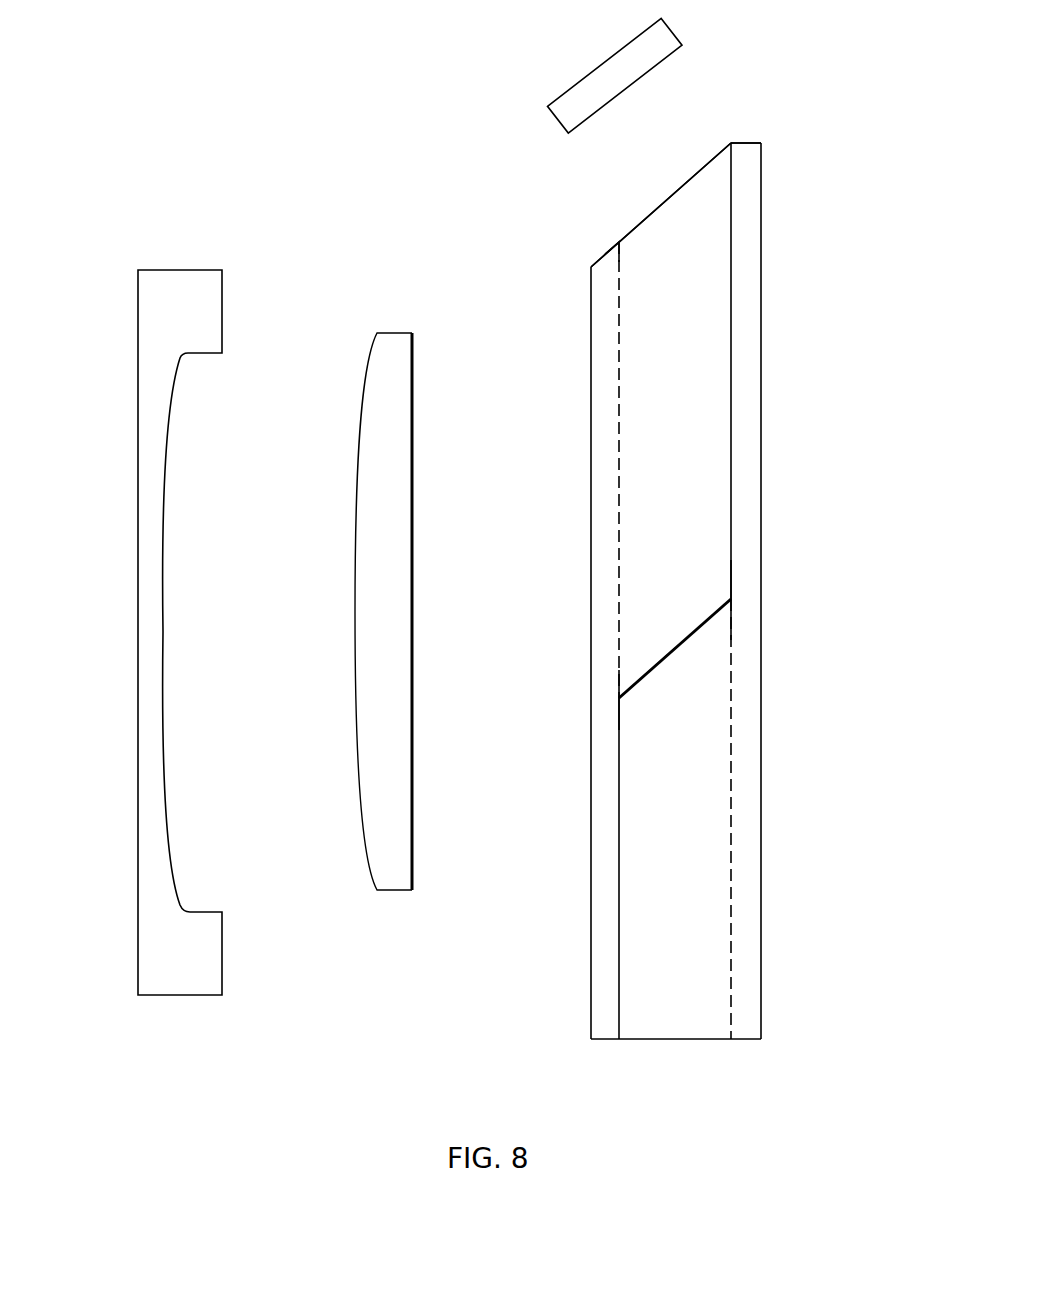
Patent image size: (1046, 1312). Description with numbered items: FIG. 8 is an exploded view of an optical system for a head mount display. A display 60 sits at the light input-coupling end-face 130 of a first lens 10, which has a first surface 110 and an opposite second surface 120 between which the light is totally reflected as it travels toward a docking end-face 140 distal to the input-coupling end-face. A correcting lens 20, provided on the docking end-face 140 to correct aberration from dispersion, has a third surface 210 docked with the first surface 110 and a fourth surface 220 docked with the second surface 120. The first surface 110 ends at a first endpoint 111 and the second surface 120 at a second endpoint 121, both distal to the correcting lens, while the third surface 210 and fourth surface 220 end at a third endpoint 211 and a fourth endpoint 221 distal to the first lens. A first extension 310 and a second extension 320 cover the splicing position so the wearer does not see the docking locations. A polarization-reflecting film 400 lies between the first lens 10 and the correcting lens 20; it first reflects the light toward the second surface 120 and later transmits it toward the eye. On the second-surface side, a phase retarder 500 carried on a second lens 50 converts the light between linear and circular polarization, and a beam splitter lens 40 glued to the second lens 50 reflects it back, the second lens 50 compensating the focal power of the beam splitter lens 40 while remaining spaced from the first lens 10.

The first lens 10 is at (705, 188).
The correcting lens 20 is at (690, 1015).
The beam splitter lens 40 is at (162, 327).
The second lens 50 is at (367, 538).
The display 60 is at (628, 76).
The first surface 110 is at (733, 455).
The first endpoint 111 is at (732, 142).
The second surface 120 is at (618, 360).
The second endpoint 121 is at (618, 245).
The light input-coupling end-face 130 is at (667, 200).
The docking end-face 140 is at (650, 668).
The third surface 210 is at (734, 886).
The third endpoint 211 is at (733, 1041).
The fourth surface 220 is at (617, 868).
The fourth endpoint 221 is at (617, 1041).
The first extension 310 is at (748, 599).
The second extension 320 is at (605, 708).
The polarization-reflecting film 400 is at (700, 637).
The phase retarder 500 is at (413, 861).